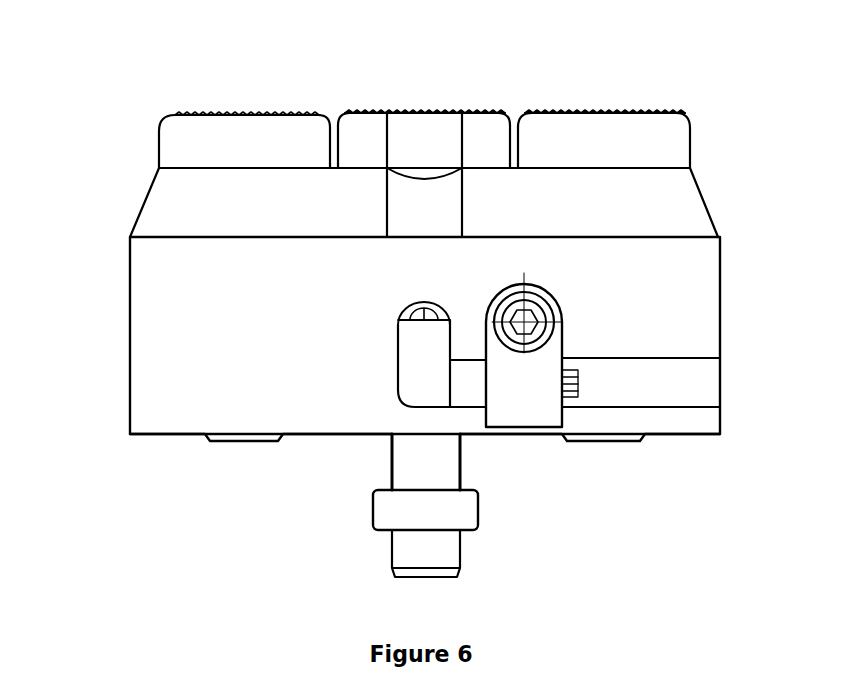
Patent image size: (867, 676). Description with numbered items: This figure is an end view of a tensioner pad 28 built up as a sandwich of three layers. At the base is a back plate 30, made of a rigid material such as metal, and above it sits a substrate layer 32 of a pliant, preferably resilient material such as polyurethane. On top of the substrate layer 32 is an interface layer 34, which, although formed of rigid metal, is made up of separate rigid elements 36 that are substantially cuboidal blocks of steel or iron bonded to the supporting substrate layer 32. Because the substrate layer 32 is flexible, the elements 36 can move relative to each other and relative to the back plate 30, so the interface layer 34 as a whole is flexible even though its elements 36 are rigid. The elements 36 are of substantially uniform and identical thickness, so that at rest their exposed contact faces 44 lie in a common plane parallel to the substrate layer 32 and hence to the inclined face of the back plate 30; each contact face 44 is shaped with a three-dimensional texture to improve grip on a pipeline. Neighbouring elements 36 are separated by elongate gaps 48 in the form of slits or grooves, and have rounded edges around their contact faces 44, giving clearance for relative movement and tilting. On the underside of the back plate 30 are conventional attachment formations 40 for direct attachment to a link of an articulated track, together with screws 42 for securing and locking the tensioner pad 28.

The tensioner pad 28 is at (85, 178).
The back plate 30 is at (710, 313).
The substrate layer 32 is at (690, 213).
The interface layer 34 is at (633, 68).
The rigid elements 36 is at (247, 127).
The attachment formations 40 is at (465, 507).
The screws 42 is at (543, 302).
The contact faces 44 is at (397, 115).
The elongate gaps 48 is at (333, 128).